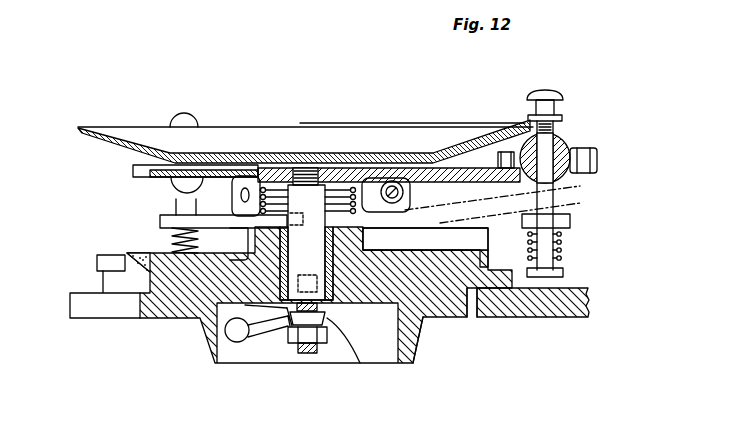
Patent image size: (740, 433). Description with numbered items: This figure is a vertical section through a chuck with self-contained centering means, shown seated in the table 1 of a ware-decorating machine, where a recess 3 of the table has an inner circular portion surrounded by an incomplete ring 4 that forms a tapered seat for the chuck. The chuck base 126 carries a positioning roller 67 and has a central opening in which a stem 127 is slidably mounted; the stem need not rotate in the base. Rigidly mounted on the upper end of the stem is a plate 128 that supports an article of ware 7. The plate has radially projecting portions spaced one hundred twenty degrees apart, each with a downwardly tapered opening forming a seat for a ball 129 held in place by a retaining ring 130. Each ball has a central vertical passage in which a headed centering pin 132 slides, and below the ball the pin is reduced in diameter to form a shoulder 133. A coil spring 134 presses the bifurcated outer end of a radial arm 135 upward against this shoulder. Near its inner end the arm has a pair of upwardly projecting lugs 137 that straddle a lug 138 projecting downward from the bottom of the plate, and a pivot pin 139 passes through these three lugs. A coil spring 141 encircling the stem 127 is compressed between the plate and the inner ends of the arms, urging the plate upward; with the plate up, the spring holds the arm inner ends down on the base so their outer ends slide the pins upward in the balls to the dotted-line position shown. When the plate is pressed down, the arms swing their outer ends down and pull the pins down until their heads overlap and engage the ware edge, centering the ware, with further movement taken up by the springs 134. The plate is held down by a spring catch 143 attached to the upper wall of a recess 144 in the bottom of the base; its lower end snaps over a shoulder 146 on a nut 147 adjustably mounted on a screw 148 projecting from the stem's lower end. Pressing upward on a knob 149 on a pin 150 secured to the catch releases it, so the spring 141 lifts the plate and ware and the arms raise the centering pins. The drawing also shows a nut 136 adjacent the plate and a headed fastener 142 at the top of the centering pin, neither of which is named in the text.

The table 1 is at (543, 300).
The recess 3 is at (470, 312).
The incomplete ring 4 is at (103, 283).
The article of ware 7 is at (275, 127).
The positioning roller 67 is at (97, 262).
The chuck base 126 is at (140, 253).
The stem 127 is at (298, 248).
The plate 128 is at (155, 178).
The ball 129 is at (236, 2).
The retaining ring 130 is at (598, 162).
The centering pin 132 is at (556, 195).
The shoulder 133 is at (570, 221).
The coil spring 134 is at (563, 254).
The arm 135 is at (478, 231).
The nut 136 is at (389, 168).
The lugs 137 is at (414, 207).
The lug 138 is at (404, 189).
The pivot pin 139 is at (385, 190).
The coil spring 141 is at (240, 204).
The bolt 142 is at (560, 112).
The spring catch 143 is at (289, 322).
The recess 144 is at (395, 358).
The shoulder 146 is at (419, 333).
The nut 147 is at (335, 325).
The screw 148 is at (310, 355).
The knob 149 is at (233, 342).
The pin 150 is at (255, 338).